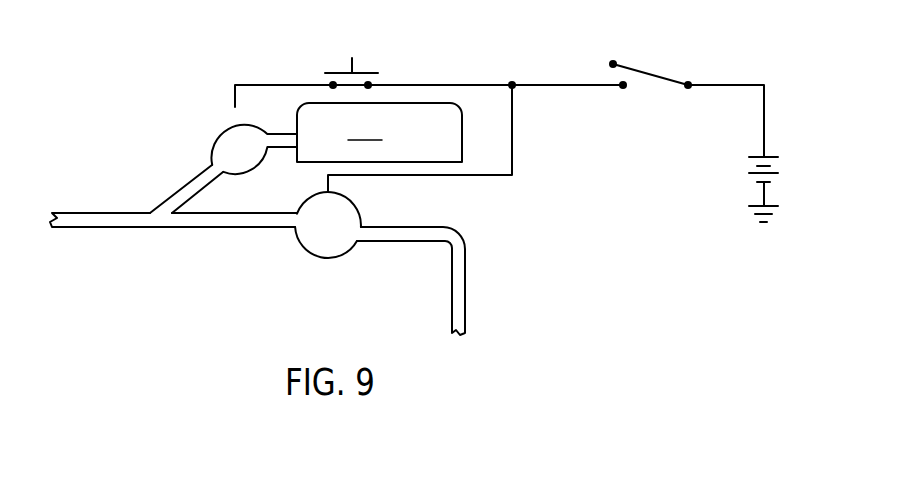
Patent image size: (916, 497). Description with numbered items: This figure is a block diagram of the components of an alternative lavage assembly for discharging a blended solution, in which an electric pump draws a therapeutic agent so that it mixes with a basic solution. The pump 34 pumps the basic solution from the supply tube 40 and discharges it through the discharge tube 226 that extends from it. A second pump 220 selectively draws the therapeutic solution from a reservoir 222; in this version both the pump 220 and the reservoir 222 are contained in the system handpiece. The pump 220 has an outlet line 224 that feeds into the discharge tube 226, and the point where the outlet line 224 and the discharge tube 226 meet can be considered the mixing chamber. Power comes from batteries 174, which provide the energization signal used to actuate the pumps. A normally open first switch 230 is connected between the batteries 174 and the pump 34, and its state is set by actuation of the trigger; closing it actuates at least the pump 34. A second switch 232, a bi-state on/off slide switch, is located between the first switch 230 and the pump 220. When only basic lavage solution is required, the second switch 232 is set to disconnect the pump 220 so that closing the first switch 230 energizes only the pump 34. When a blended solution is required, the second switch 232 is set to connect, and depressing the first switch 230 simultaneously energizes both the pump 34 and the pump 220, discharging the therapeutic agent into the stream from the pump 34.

The pump 220 is at (202, 137).
The reservoir 222 is at (365, 132).
The outlet line 224 is at (185, 187).
The discharge tube 226 is at (97, 227).
The second switch 232 is at (382, 73).
The first switch 230 is at (642, 87).
The batteries 174 is at (789, 162).
The pump 34 is at (362, 218).
The supply tube 40 is at (465, 282).